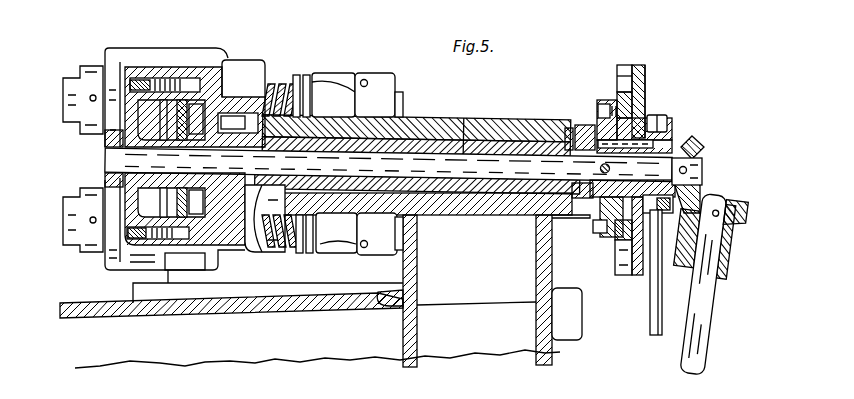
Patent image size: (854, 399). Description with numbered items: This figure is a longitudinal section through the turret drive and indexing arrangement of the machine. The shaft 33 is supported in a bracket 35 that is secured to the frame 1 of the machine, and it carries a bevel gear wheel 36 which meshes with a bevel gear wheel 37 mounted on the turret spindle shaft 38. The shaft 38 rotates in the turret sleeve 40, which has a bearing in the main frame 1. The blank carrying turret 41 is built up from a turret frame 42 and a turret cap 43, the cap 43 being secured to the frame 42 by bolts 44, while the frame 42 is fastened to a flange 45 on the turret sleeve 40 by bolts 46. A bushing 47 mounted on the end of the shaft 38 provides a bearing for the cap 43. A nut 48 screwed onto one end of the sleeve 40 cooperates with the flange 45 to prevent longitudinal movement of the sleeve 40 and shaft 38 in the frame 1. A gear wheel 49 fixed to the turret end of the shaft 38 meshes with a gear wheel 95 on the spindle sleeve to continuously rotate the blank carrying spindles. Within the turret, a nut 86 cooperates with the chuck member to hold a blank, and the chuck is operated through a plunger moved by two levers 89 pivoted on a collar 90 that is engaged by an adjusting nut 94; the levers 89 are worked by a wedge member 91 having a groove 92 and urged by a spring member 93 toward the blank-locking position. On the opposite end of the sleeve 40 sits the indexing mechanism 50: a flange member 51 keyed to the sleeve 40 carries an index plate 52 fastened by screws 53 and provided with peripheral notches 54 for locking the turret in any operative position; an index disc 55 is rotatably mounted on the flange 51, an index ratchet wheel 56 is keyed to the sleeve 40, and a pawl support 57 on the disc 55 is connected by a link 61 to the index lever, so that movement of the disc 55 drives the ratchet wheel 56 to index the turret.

The frame 1 is at (552, 356).
The shaft 33 is at (712, 306).
The bracket 35 is at (740, 266).
The bevel gear wheel 36 is at (736, 198).
The bevel gear wheel 37 is at (696, 141).
The turret spindle shaft 38 is at (703, 164).
The turret sleeve 40 is at (462, 118).
The blank carrying turret 41 is at (148, 36).
The turret frame 42 is at (240, 64).
The turret cap 43 is at (113, 47).
The bolts 44 is at (150, 80).
The flange 45 is at (250, 222).
The bolts 46 is at (228, 116).
The bushing 47 is at (112, 152).
The nut 48 is at (576, 128).
The gear wheel 49 is at (178, 192).
The indexing mechanism 50 is at (683, 85).
The flange member 51 is at (602, 104).
The index plate 52 is at (636, 65).
The screws 53 is at (598, 110).
The notches 54 is at (622, 65).
The index disc 55 is at (646, 68).
The index ratchet wheel 56 is at (656, 226).
The pawl support 57 is at (665, 122).
The link 61 is at (661, 278).
The nut 86 is at (78, 66).
The levers 89 is at (340, 73).
The collar 90 is at (372, 73).
The wedge member 91 is at (309, 76).
The groove 92 is at (297, 75).
The spring member 93 is at (272, 84).
The adjusting nut 94 is at (400, 92).
The gear wheel 95 is at (157, 115).